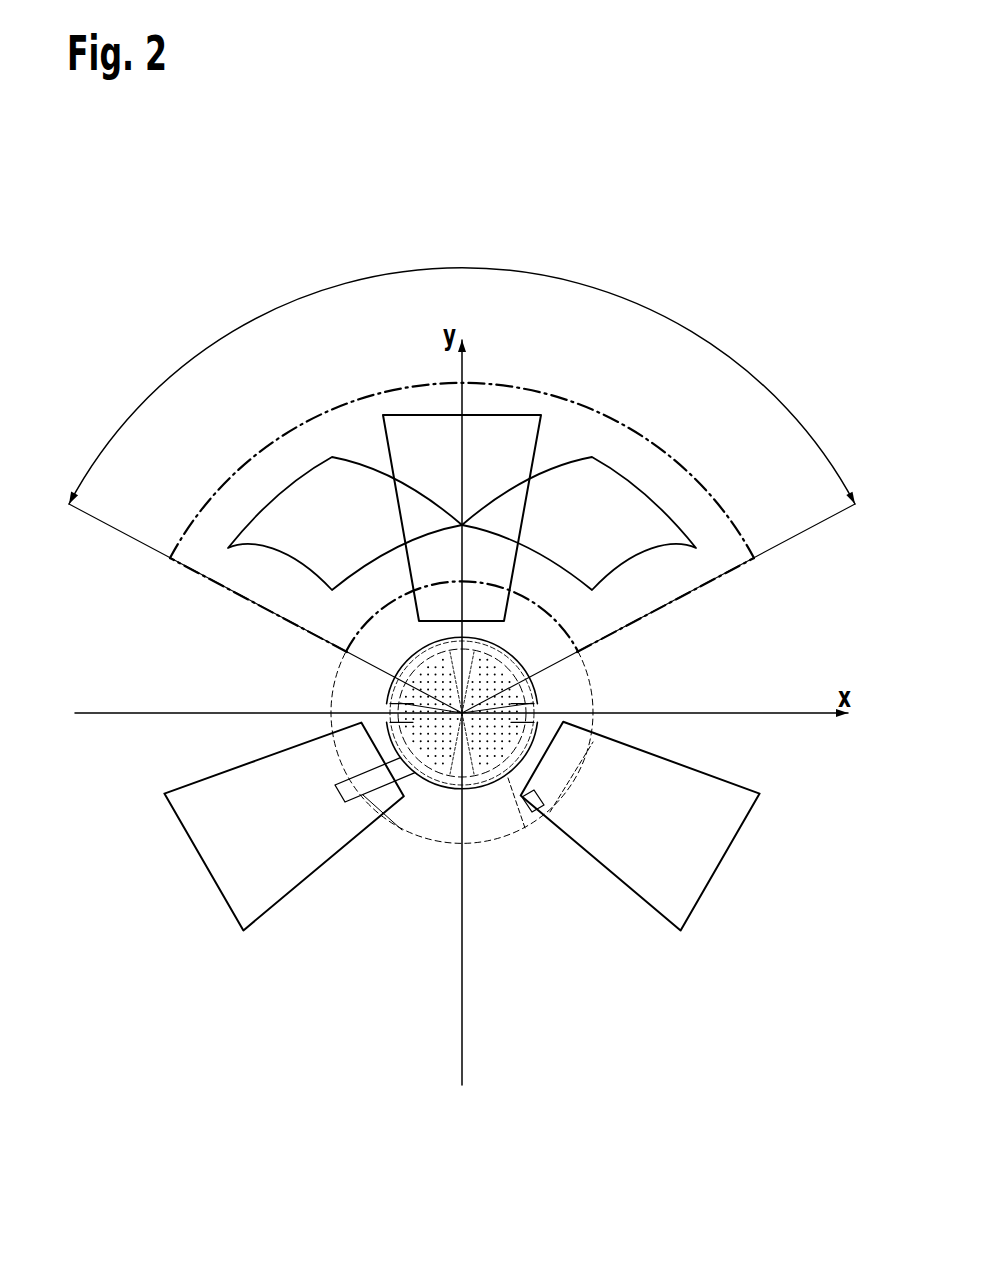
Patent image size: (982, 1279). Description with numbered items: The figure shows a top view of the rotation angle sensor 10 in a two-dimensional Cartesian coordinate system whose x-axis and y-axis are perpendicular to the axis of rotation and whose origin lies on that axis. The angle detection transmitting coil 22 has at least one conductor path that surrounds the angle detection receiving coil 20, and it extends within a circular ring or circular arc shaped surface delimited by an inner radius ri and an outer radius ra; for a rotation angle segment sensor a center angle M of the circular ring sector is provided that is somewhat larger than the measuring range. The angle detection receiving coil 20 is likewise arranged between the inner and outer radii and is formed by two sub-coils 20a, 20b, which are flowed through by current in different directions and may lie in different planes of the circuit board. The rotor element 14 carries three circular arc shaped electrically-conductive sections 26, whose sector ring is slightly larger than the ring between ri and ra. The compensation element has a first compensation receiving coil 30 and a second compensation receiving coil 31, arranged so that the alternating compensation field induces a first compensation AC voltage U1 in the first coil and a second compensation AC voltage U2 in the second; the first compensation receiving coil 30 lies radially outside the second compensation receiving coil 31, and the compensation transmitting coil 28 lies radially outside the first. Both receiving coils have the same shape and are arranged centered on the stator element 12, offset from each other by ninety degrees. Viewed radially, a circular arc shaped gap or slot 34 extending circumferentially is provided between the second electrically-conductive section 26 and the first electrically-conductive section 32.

The rotation angle sensor 10 is at (193, 273).
The stator element 12 is at (437, 517).
The rotor element 14 is at (467, 690).
The angle detection receiving coil 20 is at (465, 495).
The first sub-coil 20a is at (228, 546).
The second sub-coil 20b is at (710, 497).
The angle detection transmitting coil 22 is at (202, 581).
The circular arc shaped electrically-conductive section 26 is at (483, 435).
The compensation transmitting coil 28 is at (520, 657).
The first compensation receiving coil 30 is at (411, 667).
The second compensation receiving coil 31 is at (398, 692).
The first electrically-conductive section 32 is at (505, 735).
The gap or slot 34 is at (548, 772).
The first compensation AC voltage U1 is at (356, 794).
The second compensation AC voltage U2 is at (526, 806).